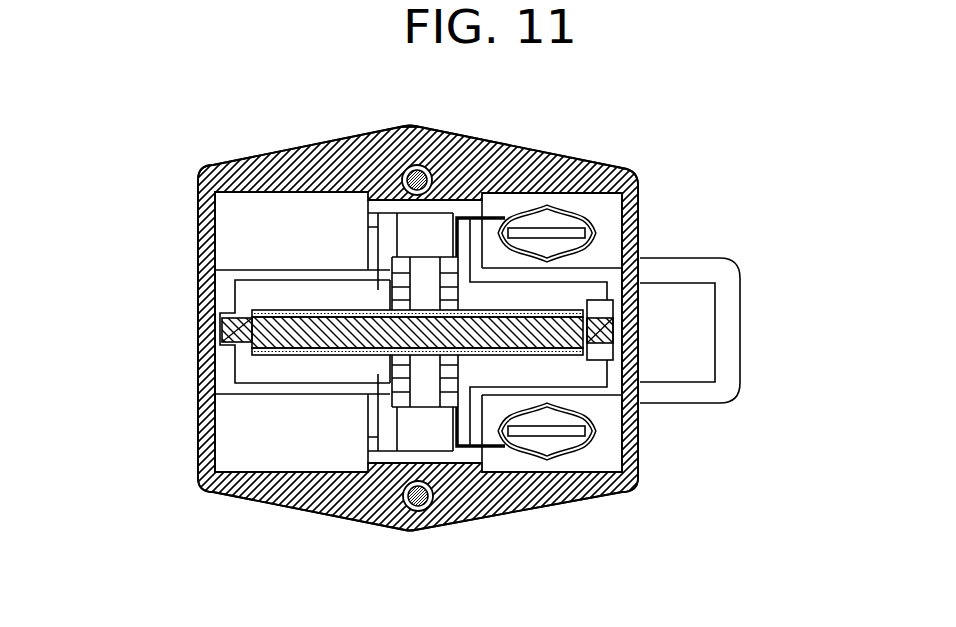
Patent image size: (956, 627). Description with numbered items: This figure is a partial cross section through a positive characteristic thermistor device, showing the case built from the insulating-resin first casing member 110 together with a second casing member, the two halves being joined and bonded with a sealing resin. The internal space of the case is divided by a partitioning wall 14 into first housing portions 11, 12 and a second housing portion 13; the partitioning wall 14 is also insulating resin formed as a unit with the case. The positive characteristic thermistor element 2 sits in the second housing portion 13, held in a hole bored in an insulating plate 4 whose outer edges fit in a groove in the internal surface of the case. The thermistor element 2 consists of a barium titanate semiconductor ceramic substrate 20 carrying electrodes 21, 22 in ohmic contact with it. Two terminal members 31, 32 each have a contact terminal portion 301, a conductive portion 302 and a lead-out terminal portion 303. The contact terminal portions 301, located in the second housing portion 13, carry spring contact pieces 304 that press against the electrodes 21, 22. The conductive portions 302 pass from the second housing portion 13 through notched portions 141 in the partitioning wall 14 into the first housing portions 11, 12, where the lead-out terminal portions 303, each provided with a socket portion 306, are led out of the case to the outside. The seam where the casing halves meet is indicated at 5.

The first casing member 110 is at (205, 466).
The first housing portion 11 is at (640, 182).
The first housing portion 12 is at (640, 488).
The parting seam 5 is at (408, 127).
The partitioning wall 14 is at (270, 272).
The notched portion 141 is at (475, 252).
The second housing portion 13 is at (323, 293).
The spring contact piece 304 is at (405, 168).
The positive characteristic thermistor element 2 is at (272, 305).
The contact terminal portion 301 is at (386, 290).
The conductive portion 302 is at (470, 213).
The lead-out terminal portion 303 is at (575, 200).
The socket portion 306 is at (593, 240).
The terminal member 31 is at (470, 293).
The terminal member 32 is at (468, 368).
The substrate 20 is at (270, 338).
The electrode 21 is at (270, 313).
The electrode 22 is at (272, 357).
The insulating plate 4 is at (222, 330).